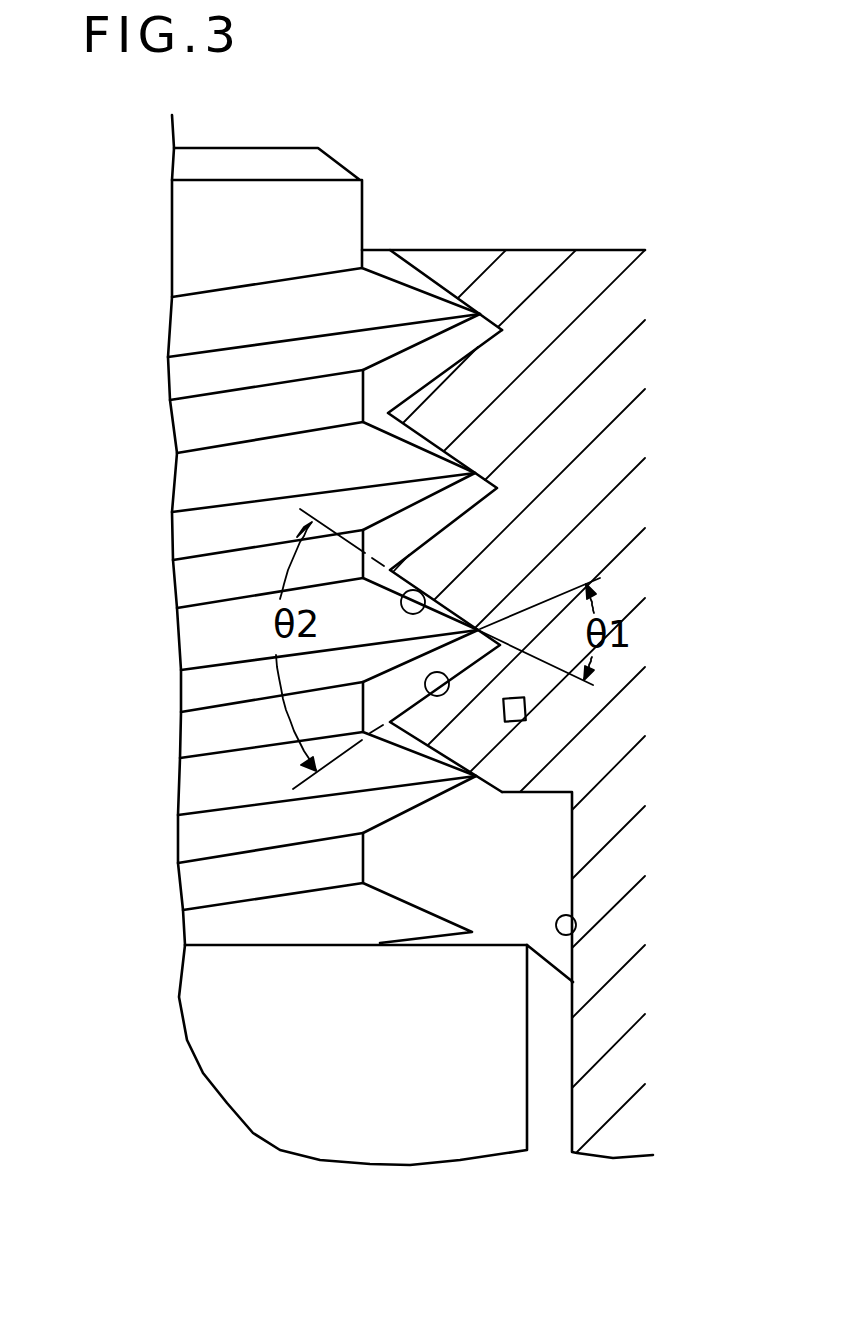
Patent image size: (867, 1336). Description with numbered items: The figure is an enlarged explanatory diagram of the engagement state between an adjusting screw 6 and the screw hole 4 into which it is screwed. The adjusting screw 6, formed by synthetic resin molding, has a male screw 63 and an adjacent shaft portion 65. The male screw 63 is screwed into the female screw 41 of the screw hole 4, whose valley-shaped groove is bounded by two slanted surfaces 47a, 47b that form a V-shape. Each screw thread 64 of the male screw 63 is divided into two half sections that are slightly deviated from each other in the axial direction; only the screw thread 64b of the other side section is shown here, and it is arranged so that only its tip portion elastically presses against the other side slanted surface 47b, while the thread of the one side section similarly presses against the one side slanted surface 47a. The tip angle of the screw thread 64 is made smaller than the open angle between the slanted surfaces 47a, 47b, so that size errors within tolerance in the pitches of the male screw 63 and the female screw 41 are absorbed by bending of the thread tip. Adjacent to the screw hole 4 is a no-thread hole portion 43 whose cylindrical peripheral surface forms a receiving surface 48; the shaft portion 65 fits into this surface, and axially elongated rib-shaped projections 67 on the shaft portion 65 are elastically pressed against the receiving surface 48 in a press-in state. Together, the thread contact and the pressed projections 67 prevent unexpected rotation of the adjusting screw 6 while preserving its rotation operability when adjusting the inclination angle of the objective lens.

The screw hole 4 is at (378, 257).
The female screw 41 is at (508, 280).
The no-thread hole portion 43 is at (548, 853).
The one side slanted surface 47a is at (447, 693).
The other side slanted surface 47b is at (432, 607).
The receiving surface 48 is at (582, 934).
The adjusting screw 6 is at (295, 694).
The male screw 63 is at (428, 807).
The screw thread 64 is at (249, 530).
The screw thread of the other side section 64b is at (220, 663).
The shaft portion 65 is at (325, 1115).
The rib-shaped projections 67 is at (553, 1075).